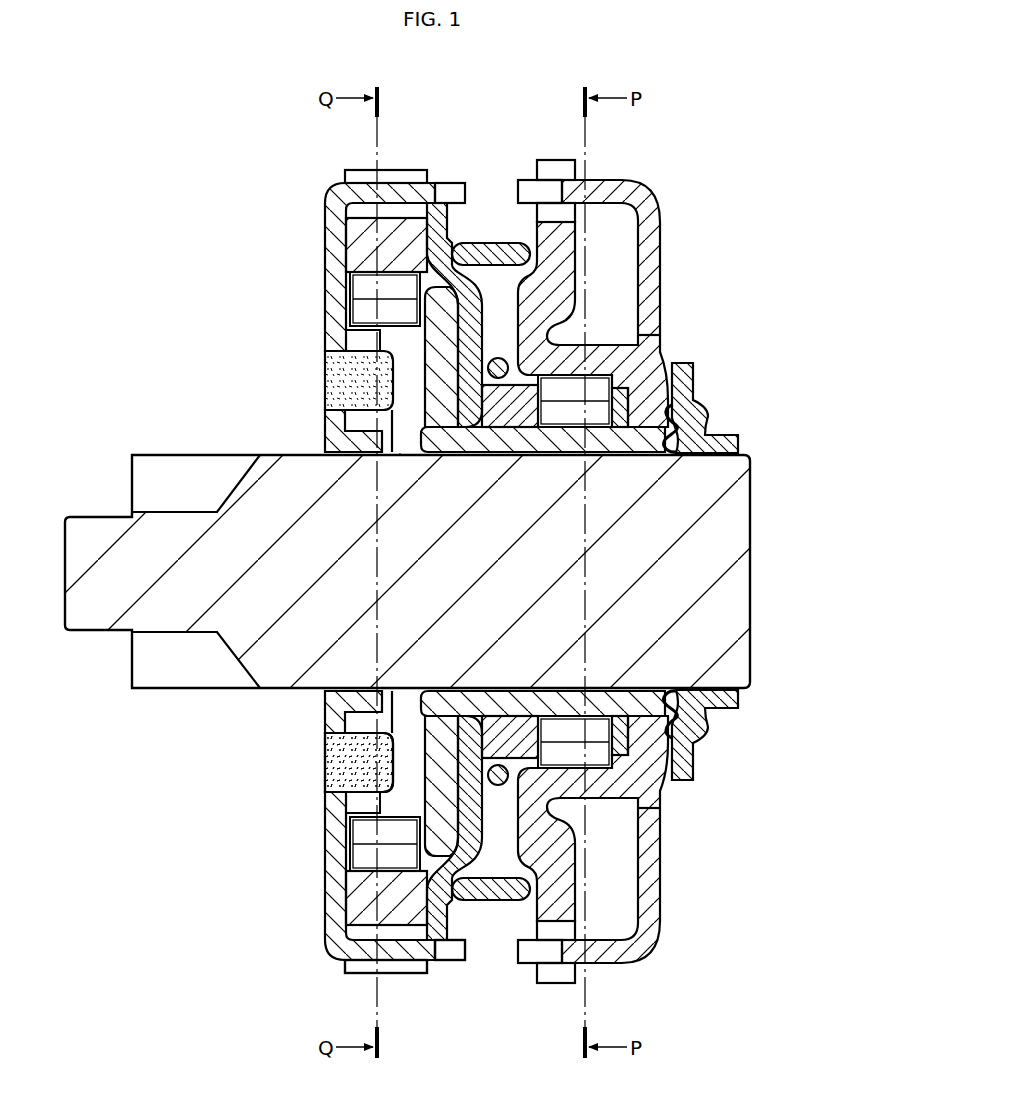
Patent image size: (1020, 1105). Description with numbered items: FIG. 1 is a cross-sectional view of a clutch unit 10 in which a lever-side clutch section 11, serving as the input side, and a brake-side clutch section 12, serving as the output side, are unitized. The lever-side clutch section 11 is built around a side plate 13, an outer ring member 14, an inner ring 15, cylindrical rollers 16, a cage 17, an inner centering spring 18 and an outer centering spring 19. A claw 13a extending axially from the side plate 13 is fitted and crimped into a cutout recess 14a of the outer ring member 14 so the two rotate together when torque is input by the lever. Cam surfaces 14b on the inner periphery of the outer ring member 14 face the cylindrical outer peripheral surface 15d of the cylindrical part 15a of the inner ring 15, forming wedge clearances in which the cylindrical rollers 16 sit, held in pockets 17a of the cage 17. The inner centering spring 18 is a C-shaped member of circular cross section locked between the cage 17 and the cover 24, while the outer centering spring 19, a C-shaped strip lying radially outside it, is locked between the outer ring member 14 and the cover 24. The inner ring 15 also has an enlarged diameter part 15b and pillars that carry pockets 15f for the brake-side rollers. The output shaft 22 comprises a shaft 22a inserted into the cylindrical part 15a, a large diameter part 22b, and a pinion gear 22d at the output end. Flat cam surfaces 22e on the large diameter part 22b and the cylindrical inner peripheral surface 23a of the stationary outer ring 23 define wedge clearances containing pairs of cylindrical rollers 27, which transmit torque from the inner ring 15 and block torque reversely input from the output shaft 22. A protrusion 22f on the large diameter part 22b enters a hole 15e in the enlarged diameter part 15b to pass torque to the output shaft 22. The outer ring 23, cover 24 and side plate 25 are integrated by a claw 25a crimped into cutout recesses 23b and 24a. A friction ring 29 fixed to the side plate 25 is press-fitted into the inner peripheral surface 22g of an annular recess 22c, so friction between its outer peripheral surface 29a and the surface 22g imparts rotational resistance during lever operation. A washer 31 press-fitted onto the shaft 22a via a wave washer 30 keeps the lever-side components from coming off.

The clutch unit 10 is at (692, 143).
The lever-side clutch section 11 is at (674, 362).
The brake-side clutch section 12 is at (328, 261).
The side plate 13 is at (664, 219).
The claw 13a is at (598, 962).
The outer ring member 14 is at (627, 839).
The cutout recess 14a is at (624, 839).
The cam surface 14b is at (628, 757).
The inner ring 15 is at (543, 472).
The cylindrical part 15a is at (558, 441).
The enlarged diameter part 15b is at (444, 378).
The cylindrical outer peripheral surface 15d is at (578, 699).
The hole 15e is at (352, 786).
The pocket 15f is at (402, 940).
The cylindrical roller 16 is at (598, 384).
The cage 17 is at (672, 777).
The pocket 17a is at (600, 727).
The inner centering spring 18 is at (497, 357).
The outer centering spring 19 is at (490, 241).
The output shaft 22 is at (433, 553).
The shaft 22a is at (718, 540).
The large diameter part 22b is at (340, 742).
The annular recess 22c is at (406, 457).
The pinion gear 22d is at (165, 466).
The flat cam surface 22e is at (354, 316).
The protrusion 22f is at (433, 701).
The inner peripheral surface 22g is at (346, 342).
The outer ring 23 is at (402, 219).
The cylindrical inner peripheral surface 23a is at (320, 282).
The cutout recess 23b is at (366, 925).
The cover 24 is at (455, 240).
The cutout recess 24a is at (450, 955).
The side plate 25 is at (345, 261).
The claw 25a is at (422, 975).
The cylindrical roller 27 is at (374, 858).
The friction ring 29 is at (360, 421).
The outer peripheral surface 29a is at (360, 801).
The wave washer 30 is at (690, 447).
The washer 31 is at (712, 703).